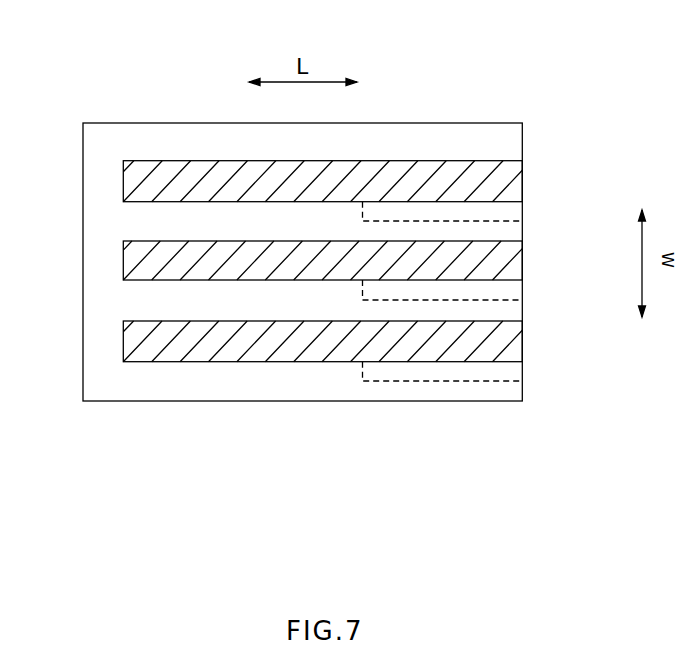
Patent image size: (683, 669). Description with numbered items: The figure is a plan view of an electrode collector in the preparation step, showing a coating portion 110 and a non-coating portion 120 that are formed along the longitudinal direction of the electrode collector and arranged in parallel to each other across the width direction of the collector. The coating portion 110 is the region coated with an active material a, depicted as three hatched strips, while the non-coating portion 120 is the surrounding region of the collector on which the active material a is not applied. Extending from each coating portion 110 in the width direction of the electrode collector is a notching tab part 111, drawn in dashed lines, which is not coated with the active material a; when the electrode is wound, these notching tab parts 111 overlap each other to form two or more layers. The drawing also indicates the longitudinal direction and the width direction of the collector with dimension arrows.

The coating portion 110 is at (496, 161).
The notching tab part 111 is at (522, 209).
The non-coating portion 120 is at (103, 182).
The active material a is at (513, 183).